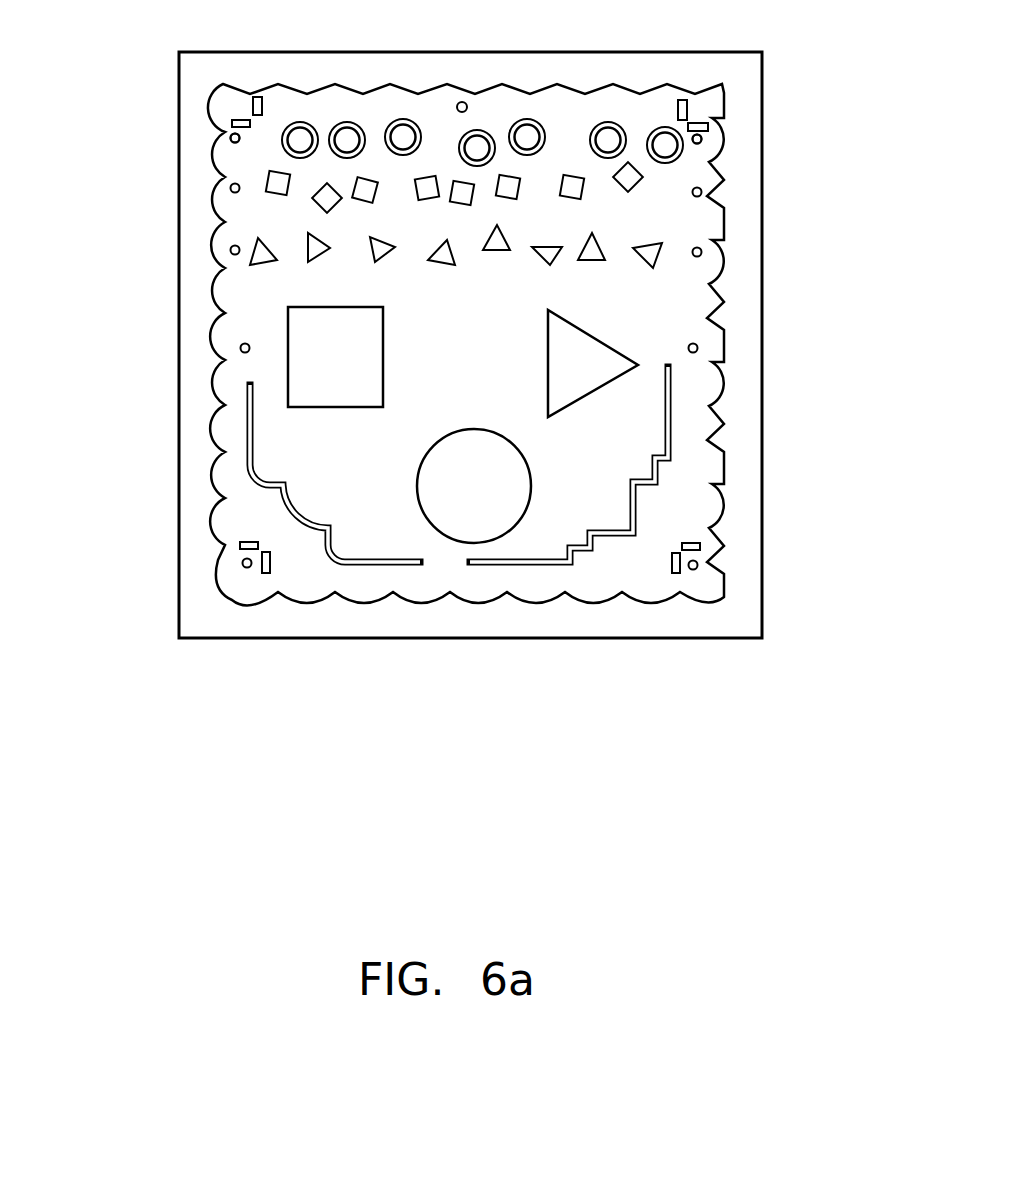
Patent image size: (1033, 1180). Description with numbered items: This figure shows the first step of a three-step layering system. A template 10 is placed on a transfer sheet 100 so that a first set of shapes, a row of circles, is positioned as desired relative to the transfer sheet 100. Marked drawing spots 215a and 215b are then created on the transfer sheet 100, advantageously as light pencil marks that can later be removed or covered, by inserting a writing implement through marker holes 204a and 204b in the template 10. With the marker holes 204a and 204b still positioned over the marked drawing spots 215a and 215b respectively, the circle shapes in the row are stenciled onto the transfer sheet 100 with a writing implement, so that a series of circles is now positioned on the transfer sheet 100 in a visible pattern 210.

The template 10 is at (700, 400).
The transfer sheet 100 is at (200, 400).
The marker hole 204a is at (156, 127).
The marker hole 204b is at (760, 135).
The visible pattern 210 is at (692, 115).
The marked drawing spot 215a is at (235, 143).
The marked drawing spot 215b is at (702, 145).